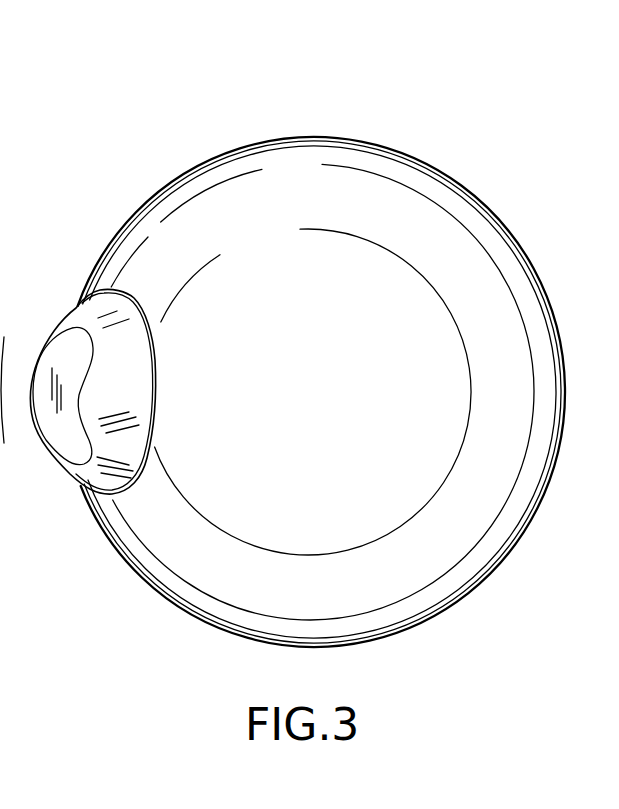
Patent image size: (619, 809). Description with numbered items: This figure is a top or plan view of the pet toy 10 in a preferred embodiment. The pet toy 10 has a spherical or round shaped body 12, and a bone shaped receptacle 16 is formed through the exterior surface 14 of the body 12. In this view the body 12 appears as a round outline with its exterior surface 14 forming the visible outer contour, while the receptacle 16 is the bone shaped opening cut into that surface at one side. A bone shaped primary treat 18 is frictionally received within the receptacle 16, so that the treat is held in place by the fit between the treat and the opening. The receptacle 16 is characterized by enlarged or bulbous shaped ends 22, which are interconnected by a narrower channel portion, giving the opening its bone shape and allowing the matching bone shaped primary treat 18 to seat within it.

The pet toy 10 is at (461, 77).
The body 12 is at (528, 220).
The exterior surface 14 is at (426, 166).
The receptacle 16 is at (181, 355).
The primary treat 18 is at (58, 421).
The enlarged ends 22 is at (142, 304).